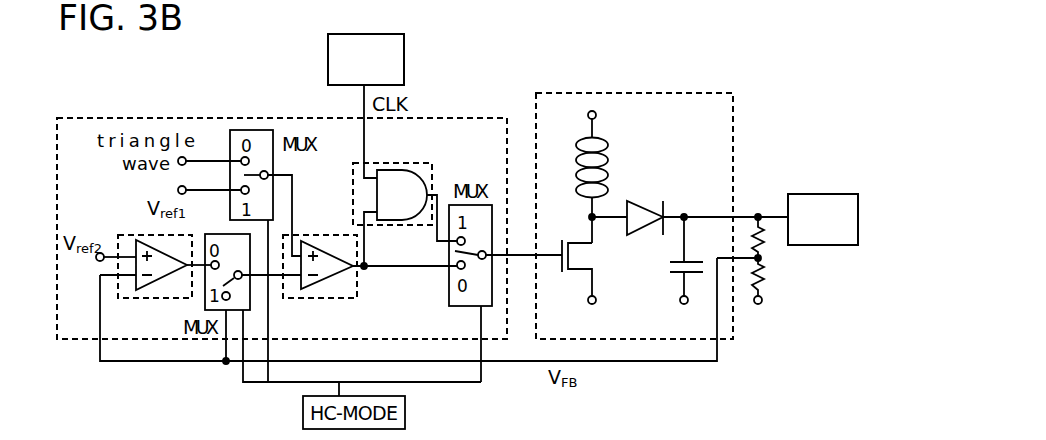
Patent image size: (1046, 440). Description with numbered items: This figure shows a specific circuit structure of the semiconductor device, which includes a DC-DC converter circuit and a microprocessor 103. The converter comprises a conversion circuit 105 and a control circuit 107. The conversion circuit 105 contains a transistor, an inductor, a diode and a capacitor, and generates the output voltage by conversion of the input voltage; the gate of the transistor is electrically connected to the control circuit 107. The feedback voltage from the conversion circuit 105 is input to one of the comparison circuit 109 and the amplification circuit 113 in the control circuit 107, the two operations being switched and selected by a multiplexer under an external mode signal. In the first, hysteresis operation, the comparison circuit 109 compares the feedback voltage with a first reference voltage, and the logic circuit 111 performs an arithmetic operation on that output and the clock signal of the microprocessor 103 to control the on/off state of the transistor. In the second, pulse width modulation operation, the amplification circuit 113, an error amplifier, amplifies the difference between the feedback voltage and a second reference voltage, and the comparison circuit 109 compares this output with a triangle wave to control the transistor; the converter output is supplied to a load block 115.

The microprocessor 103 is at (366, 59).
The conversion circuit 105 is at (634, 203).
The control circuit 107 is at (282, 215).
The comparison circuit 109 is at (320, 255).
The logic circuit 111 is at (392, 179).
The amplification circuit 113 is at (155, 282).
The load 115 is at (823, 219).